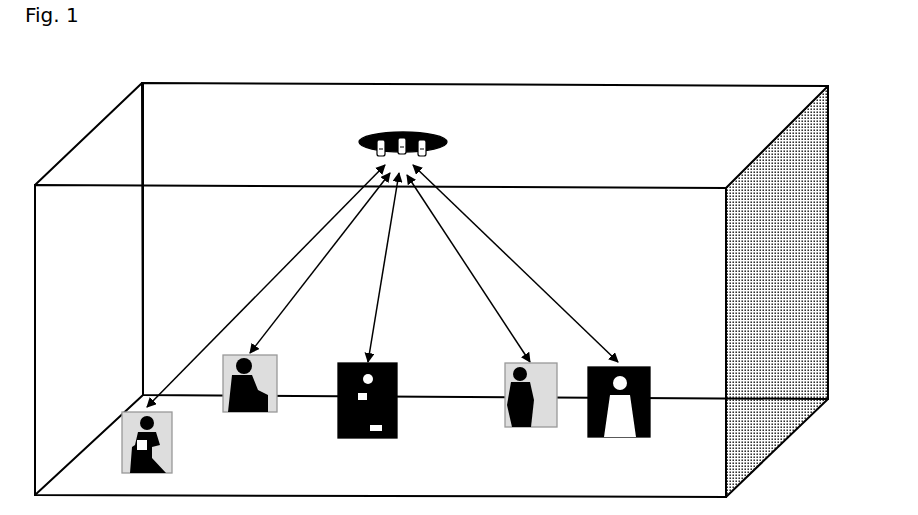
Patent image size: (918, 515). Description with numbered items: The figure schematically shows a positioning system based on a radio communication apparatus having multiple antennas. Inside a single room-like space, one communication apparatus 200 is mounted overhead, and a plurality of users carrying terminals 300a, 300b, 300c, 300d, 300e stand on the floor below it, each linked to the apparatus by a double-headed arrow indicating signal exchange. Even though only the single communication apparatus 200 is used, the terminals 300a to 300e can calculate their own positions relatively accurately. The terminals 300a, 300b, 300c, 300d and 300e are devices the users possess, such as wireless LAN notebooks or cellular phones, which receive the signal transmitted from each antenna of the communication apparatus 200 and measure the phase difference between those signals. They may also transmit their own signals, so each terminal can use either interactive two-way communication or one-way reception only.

The communication apparatus 200 is at (360, 130).
The terminal 300a is at (148, 457).
The terminal 300b is at (250, 399).
The terminal 300c is at (365, 416).
The terminal 300d is at (526, 410).
The terminal 300e is at (620, 416).